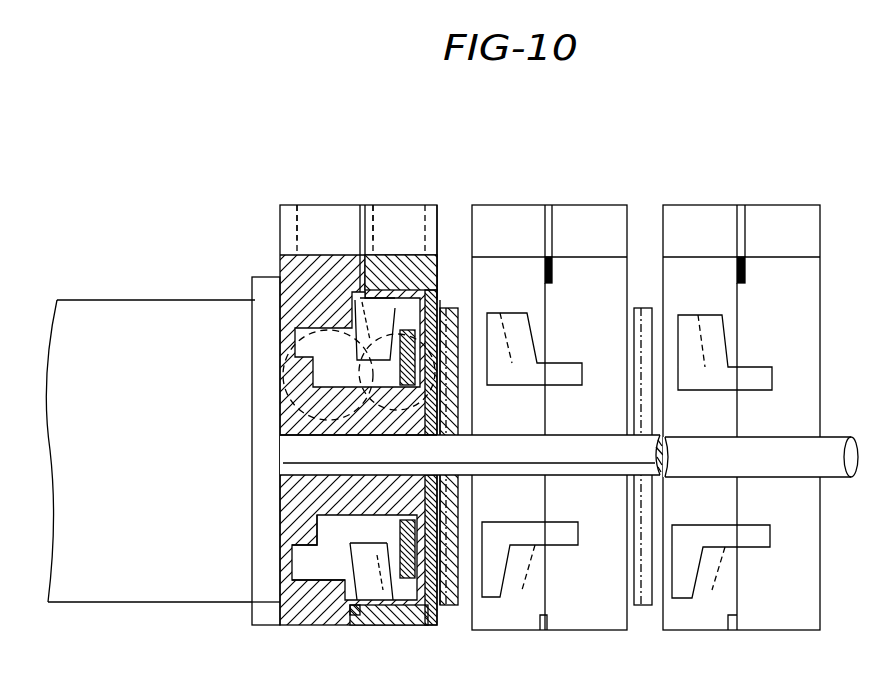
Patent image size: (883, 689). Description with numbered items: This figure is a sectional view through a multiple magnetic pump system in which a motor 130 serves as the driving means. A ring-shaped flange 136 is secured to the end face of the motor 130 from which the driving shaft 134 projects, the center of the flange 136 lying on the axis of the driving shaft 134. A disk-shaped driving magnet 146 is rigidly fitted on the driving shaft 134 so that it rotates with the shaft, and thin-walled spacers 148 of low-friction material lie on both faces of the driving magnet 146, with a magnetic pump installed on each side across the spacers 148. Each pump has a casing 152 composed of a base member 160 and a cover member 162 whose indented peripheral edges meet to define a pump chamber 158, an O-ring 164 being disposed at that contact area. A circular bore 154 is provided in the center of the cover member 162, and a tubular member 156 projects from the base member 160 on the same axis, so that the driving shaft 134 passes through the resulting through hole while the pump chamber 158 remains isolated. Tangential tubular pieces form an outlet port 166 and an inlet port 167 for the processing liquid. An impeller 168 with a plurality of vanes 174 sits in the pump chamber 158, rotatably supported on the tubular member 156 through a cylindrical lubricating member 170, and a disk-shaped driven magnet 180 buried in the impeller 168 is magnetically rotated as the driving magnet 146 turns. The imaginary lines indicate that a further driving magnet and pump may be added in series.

The motor 130 is at (146, 300).
The ring-shaped flange 136 is at (252, 296).
The casing 152 is at (328, 114).
The base member 160 is at (283, 204).
The cover member 162 is at (366, 204).
The outlet port 166 is at (298, 216).
The inlet port 167 is at (376, 216).
The pump chamber 158 is at (405, 230).
The spacer 148 is at (438, 306).
The driving magnet 146 is at (643, 306).
The impeller 168 is at (540, 332).
The circular bore 154 is at (297, 437).
The driving shaft 134 is at (550, 473).
The lubricating member 170 is at (253, 606).
The tubular member 156 is at (360, 500).
The O-ring 164 is at (357, 608).
The vanes 174 is at (402, 600).
The driven magnet 180 is at (430, 600).